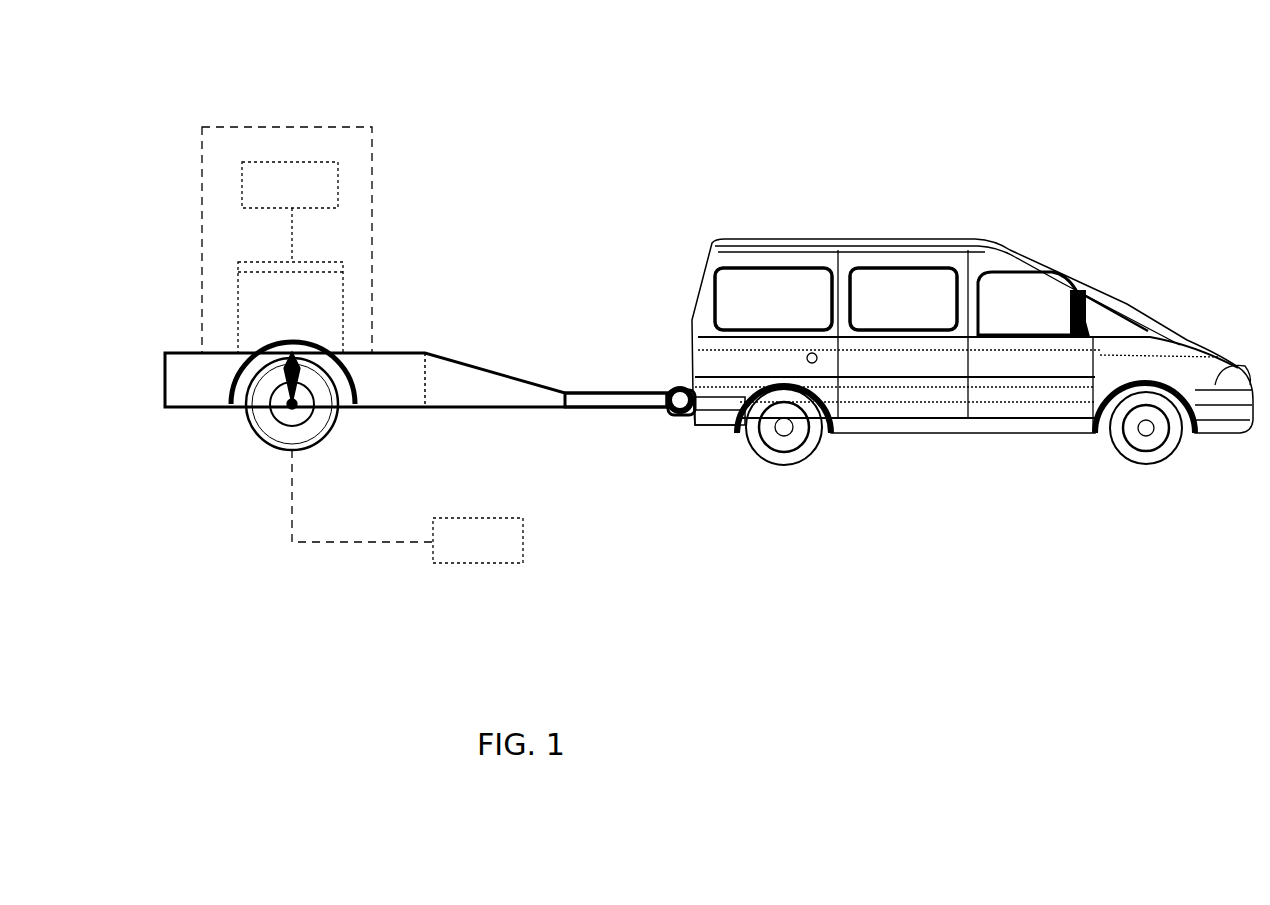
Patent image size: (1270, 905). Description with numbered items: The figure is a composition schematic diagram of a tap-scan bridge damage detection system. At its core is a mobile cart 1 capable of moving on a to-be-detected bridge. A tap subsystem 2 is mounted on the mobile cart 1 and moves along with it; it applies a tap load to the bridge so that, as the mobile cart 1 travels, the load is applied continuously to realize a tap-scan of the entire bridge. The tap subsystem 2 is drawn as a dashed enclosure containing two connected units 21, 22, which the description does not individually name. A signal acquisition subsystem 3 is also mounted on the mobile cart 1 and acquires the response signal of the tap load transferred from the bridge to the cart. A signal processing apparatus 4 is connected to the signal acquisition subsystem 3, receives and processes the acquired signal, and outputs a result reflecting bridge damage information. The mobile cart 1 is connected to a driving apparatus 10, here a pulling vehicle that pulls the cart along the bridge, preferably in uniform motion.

The mobile cart 1 is at (190, 420).
The tap subsystem 2 is at (358, 114).
The signal acquisition subsystem 3 is at (246, 376).
The signal processing apparatus 4 is at (523, 540).
The driving apparatus 10 is at (883, 237).
The measuring device 21 is at (240, 283).
The display device 22 is at (248, 181).